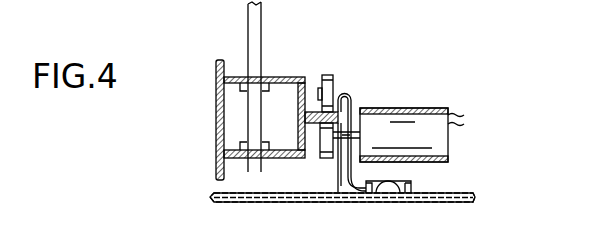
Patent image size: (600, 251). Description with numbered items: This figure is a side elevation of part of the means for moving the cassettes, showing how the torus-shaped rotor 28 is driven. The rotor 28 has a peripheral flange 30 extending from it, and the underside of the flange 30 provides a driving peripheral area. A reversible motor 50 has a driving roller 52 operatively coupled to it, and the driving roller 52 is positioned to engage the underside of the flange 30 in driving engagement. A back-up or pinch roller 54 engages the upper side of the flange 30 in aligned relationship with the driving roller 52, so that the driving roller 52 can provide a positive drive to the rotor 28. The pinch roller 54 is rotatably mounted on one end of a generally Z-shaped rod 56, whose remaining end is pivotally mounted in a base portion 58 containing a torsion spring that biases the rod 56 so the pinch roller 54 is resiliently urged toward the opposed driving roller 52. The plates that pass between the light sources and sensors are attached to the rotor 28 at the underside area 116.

The rotor 28 is at (279, 103).
The peripheral flange 30 is at (312, 125).
The reversible motor 50 is at (430, 112).
The driving roller 52 is at (327, 158).
The pinch roller 54 is at (334, 75).
The Z-shaped rod 56 is at (349, 94).
The base portion 58 is at (405, 181).
The underside of the rotor 116 is at (278, 160).